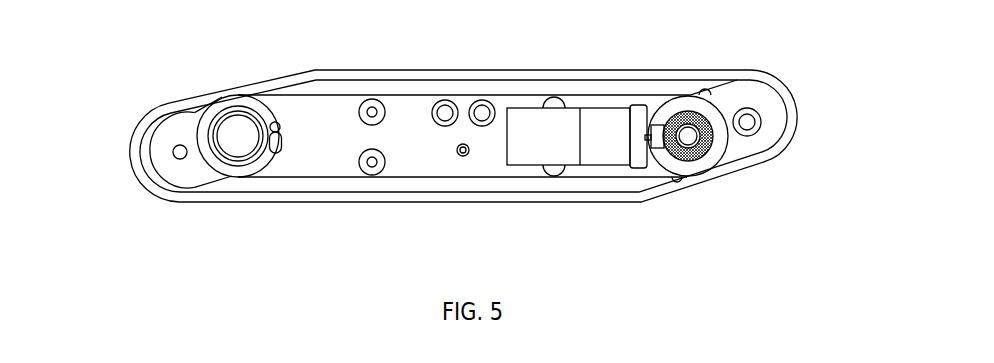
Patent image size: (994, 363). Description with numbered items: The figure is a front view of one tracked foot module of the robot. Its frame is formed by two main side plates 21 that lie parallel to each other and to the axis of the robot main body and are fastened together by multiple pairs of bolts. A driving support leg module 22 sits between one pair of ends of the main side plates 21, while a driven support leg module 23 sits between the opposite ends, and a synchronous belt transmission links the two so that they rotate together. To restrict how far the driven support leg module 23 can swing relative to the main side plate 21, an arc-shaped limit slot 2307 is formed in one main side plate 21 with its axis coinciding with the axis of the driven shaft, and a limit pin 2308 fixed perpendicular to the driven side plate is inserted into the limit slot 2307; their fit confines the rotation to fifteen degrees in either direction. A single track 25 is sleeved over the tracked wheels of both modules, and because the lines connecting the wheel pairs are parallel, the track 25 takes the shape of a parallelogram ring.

The main side plate 21 is at (443, 170).
The driving support leg module 22 is at (816, 149).
The driven support leg module 23 is at (117, 106).
The track 25 is at (463, 106).
The limit slot 2307 is at (356, 190).
The limit pin 2308 is at (353, 76).